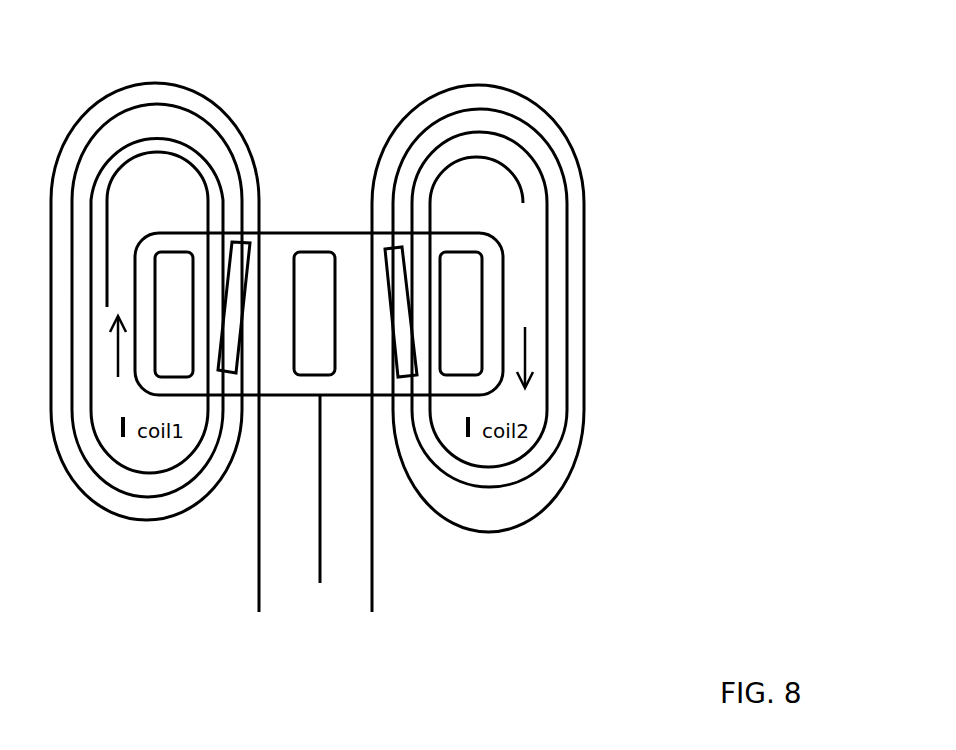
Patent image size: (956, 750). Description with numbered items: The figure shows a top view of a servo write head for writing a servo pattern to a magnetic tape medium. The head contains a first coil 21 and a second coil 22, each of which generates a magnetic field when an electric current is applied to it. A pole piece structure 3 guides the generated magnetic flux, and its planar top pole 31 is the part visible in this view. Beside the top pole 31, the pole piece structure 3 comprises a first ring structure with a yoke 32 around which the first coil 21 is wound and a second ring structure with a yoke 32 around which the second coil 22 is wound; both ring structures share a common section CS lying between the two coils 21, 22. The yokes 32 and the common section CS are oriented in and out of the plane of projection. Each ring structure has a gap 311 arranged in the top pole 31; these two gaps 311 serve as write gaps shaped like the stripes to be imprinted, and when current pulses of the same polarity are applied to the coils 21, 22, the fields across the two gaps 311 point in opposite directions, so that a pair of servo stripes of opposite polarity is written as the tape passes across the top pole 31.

The first coil 21 is at (230, 116).
The second coil 22 is at (402, 121).
The top pole 31 is at (458, 243).
The gap 311 is at (390, 247).
The yoke 32 is at (173, 373).
The pole piece structure 3 is at (322, 514).
The common section CS is at (315, 252).